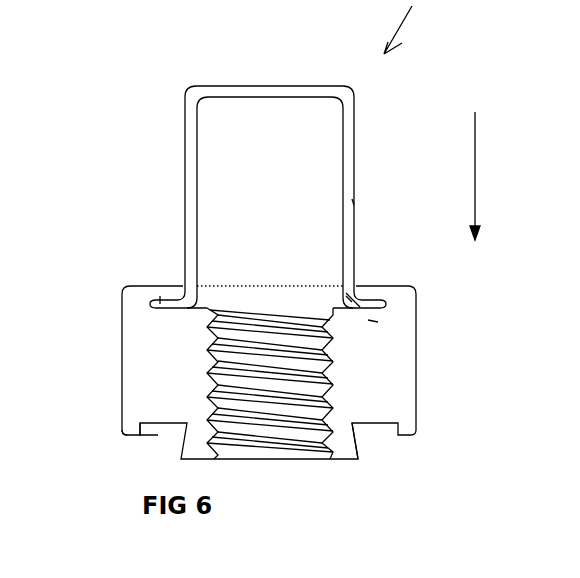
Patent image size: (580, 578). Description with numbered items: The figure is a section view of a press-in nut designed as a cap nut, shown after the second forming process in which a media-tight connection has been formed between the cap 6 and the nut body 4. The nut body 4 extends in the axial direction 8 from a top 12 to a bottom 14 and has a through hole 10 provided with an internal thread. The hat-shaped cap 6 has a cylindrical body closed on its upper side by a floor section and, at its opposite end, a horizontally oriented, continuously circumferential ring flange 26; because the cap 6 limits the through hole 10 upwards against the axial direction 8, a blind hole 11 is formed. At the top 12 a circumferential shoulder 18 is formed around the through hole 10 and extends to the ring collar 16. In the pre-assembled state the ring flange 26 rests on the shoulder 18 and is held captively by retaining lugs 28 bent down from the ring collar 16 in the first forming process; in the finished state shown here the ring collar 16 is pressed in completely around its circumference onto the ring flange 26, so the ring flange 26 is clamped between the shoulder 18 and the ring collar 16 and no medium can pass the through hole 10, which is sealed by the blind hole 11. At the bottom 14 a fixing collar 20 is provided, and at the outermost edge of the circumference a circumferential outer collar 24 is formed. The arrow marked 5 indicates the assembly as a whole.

The nut body 4 is at (398, 386).
The fastening assembly 5 is at (409, 27).
The cap 6 is at (352, 199).
The axial direction 8 is at (475, 167).
The through hole 10 is at (283, 440).
The blind hole 11 is at (313, 170).
The top 12 is at (147, 285).
The bottom 14 is at (158, 437).
The ring collar 16 is at (370, 300).
The circumferential shoulder 18 is at (346, 296).
The fixing collar 20 is at (358, 460).
The circumferential outer collar 24 is at (133, 433).
The ring flange 26 is at (368, 322).
The retaining lugs 28 is at (162, 285).